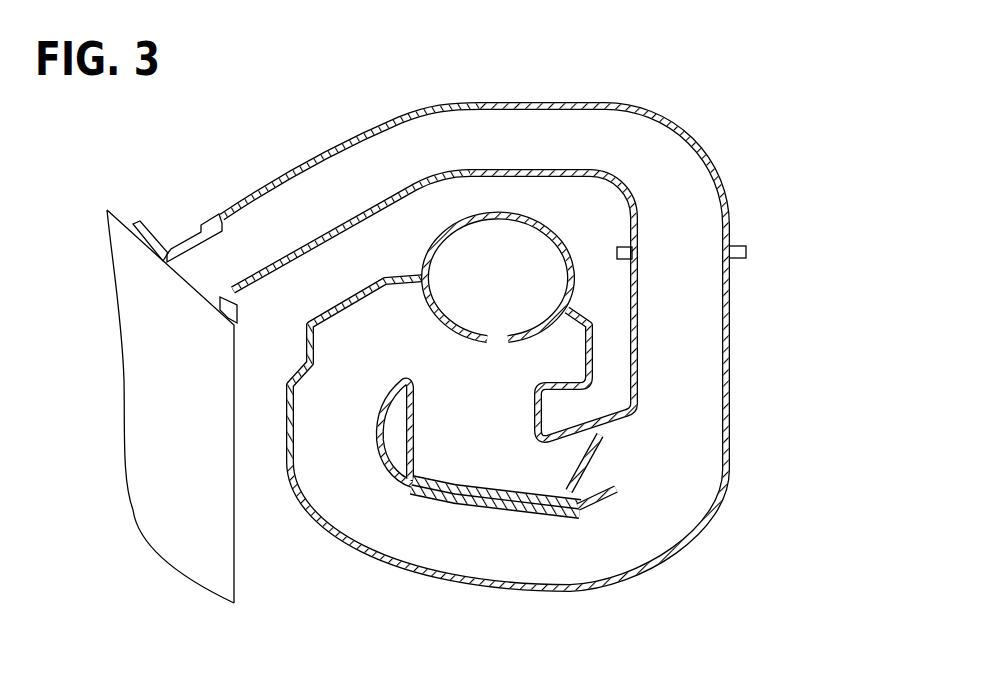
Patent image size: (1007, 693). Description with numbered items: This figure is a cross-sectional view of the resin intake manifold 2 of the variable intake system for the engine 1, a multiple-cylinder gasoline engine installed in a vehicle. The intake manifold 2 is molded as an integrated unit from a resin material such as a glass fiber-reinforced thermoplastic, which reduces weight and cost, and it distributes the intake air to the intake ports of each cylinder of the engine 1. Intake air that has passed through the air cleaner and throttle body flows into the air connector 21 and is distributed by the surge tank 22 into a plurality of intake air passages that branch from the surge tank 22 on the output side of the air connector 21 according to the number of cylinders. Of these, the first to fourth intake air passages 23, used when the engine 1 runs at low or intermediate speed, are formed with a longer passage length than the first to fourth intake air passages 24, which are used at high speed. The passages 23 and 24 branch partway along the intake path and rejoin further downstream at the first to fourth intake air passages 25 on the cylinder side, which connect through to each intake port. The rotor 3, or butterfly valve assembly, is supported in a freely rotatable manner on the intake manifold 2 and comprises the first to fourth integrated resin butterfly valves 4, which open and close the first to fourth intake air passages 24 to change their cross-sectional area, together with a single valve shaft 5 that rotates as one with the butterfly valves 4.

The engine 1 is at (232, 537).
The intake manifold 2 is at (482, 328).
The air connector 21 is at (514, 299).
The surge tank 22 is at (494, 416).
The intake air passages 23 is at (470, 558).
The intake air passages 24 is at (607, 459).
The intake air passages 25 is at (688, 164).
The rotor 3 is at (636, 436).
The butterfly valves 4 is at (603, 447).
The valve shaft 5 is at (600, 460).